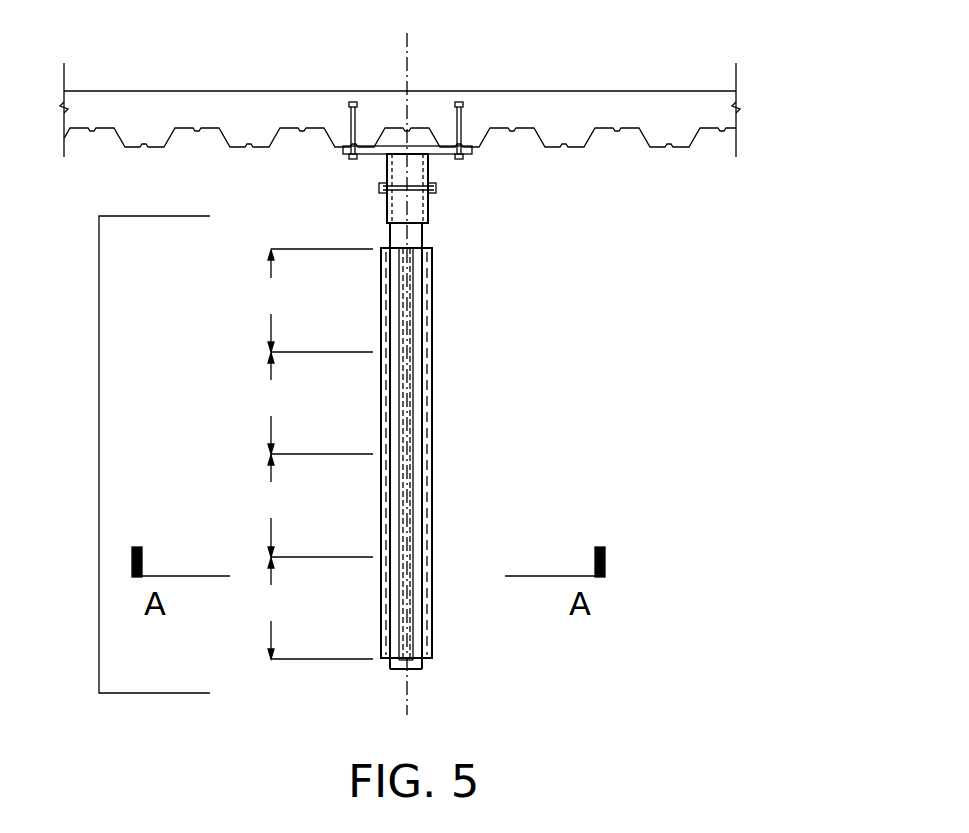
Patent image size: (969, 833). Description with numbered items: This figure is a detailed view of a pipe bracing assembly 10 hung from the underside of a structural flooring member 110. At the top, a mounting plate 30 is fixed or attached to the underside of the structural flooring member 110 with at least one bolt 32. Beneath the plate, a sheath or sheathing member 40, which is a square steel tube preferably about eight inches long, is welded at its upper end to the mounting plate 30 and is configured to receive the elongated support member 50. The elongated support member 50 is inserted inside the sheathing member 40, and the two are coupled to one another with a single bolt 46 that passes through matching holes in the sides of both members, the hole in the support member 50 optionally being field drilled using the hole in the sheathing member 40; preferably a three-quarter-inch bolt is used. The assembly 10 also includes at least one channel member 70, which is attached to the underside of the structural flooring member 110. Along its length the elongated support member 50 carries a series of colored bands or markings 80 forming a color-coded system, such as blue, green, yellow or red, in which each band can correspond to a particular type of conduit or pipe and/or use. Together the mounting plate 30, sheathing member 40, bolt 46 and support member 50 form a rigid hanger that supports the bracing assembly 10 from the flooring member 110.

The bracing assembly 10 is at (760, 398).
The mounting plate 30 is at (482, 165).
The bolt 32 is at (491, 86).
The sheathing member 40 is at (427, 209).
The bolt 46 is at (380, 189).
The elongated support member 50 is at (473, 446).
The channel member 70 is at (456, 453).
The colored bands or markings 80 is at (99, 454).
The structural flooring member 110 is at (717, 110).